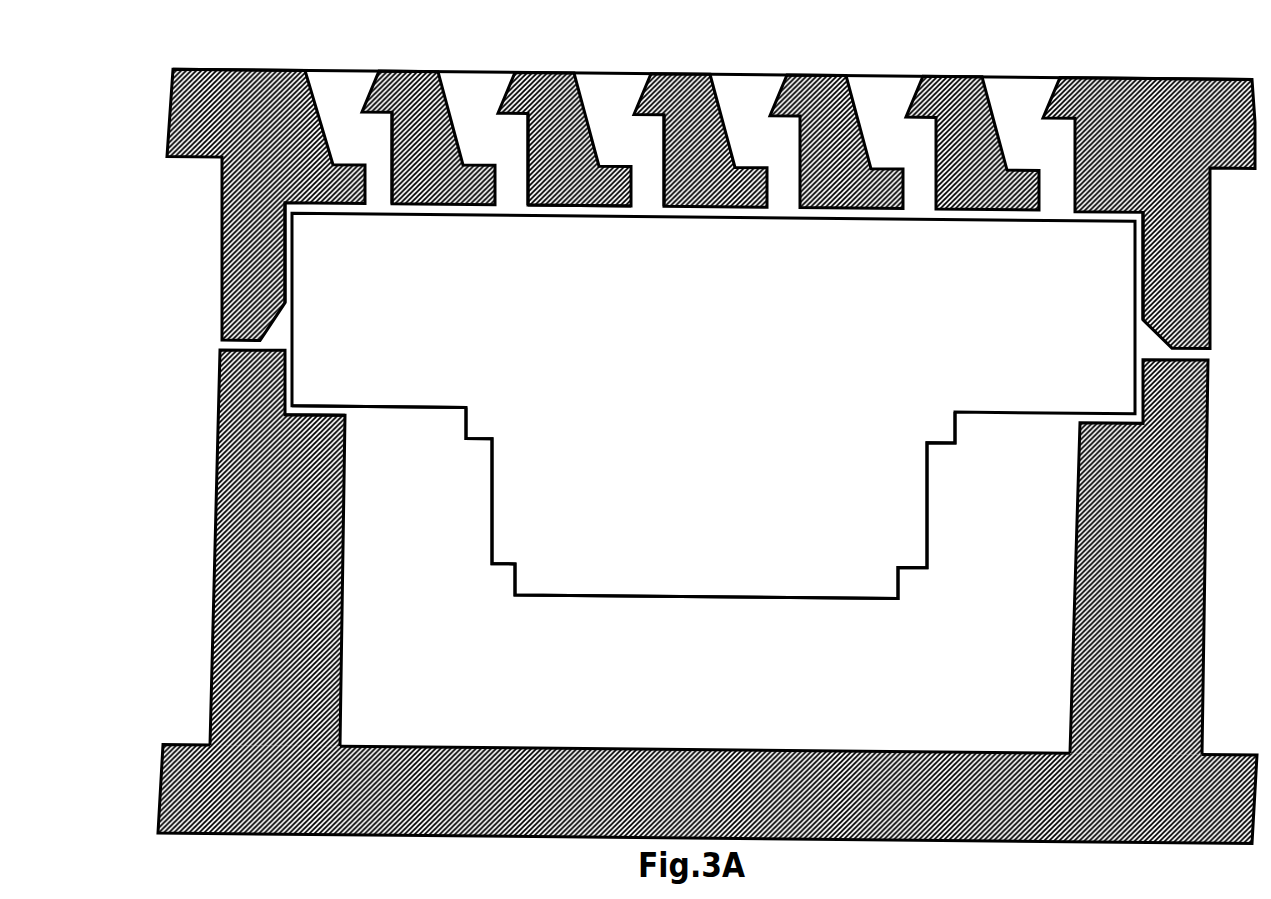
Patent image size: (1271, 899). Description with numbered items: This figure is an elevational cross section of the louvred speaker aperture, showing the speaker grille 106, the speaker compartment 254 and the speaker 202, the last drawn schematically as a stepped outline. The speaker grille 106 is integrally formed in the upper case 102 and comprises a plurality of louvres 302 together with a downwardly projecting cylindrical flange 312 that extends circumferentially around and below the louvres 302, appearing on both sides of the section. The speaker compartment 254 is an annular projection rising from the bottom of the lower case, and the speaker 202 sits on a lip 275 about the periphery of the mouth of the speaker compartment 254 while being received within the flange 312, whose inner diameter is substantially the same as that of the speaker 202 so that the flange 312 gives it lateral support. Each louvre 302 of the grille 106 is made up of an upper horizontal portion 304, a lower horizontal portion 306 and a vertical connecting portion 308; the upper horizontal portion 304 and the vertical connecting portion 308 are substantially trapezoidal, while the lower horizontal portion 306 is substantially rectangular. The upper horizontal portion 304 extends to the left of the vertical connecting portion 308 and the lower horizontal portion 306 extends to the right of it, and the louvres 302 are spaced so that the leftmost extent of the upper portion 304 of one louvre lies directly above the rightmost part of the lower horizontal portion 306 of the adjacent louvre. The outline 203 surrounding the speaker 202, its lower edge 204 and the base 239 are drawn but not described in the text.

The upper case 102 is at (255, 67).
The speaker grille 106 is at (327, 60).
The upper horizontal portion 304 is at (548, 67).
The louvres 302 is at (540, 145).
The lower horizontal portion 306 is at (598, 203).
The vertical connecting portion 308 is at (415, 136).
The frame 203 is at (322, 216).
The speaker 202 is at (912, 473).
The frame bottom 204 is at (320, 402).
The cylindrical flange 312 is at (288, 235).
The lip 275 is at (327, 409).
The speaker compartment 254 is at (213, 521).
The base 239 is at (783, 743).